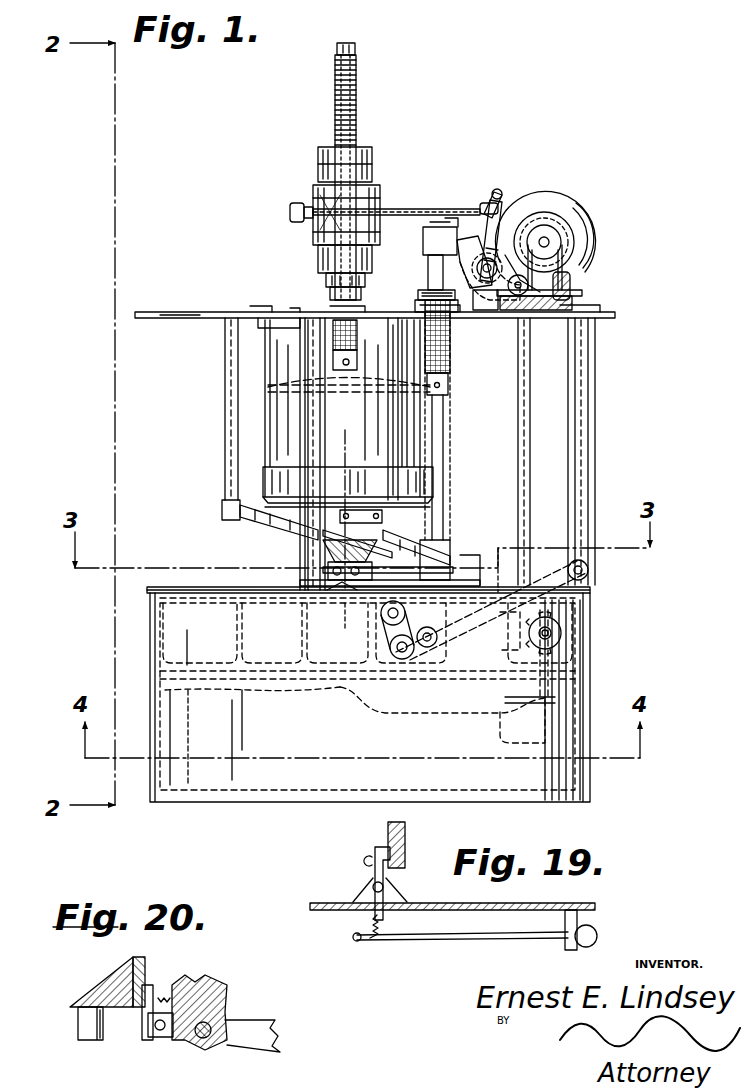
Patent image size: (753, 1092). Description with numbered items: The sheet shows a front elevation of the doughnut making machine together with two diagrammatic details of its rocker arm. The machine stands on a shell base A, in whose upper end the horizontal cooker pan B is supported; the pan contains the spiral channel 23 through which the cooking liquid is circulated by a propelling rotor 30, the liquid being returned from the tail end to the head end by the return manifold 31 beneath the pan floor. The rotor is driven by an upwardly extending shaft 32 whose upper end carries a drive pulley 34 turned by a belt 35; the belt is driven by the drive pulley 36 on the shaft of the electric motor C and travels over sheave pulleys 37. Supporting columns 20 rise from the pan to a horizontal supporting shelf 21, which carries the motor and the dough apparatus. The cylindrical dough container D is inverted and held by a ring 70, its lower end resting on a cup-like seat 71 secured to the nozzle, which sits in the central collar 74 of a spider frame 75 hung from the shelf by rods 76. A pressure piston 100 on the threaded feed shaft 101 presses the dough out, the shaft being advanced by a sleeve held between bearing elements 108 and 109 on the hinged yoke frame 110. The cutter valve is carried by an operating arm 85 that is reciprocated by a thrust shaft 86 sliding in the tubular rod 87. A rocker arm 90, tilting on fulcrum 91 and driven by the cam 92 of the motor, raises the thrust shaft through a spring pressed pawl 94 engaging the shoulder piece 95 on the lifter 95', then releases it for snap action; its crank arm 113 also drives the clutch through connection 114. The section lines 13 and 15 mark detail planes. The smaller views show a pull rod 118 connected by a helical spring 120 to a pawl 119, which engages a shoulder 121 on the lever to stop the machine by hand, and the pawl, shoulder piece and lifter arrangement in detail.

In FIG. 1, the feed shaft 101 is at (356, 90).
In FIG. 1, the fixed bearing element 108 is at (318, 162).
In FIG. 1, the upper yoke frame 110 is at (313, 196).
In FIG. 1, the fixed bearing element 109 is at (318, 256).
In FIG. 1, the connection 114 is at (406, 208).
In FIG. 1, the section line 15- 15 is at (288, 627).
In FIG. 1, the section line 13- 13 is at (338, 430).
In FIG. 1, the shoulder piece 95 is at (477, 171).
In FIG. 20, the shoulder piece 95 is at (167, 975).
In FIG. 1, the lifter 95' is at (440, 206).
In FIG. 20, the lifter 95' is at (89, 982).
In FIG. 1, the spring pressed pawl 94 is at (458, 240).
In FIG. 20, the spring pressed pawl 94 is at (147, 1020).
In FIG. 1, the crank arm 113 is at (499, 188).
In FIG. 20, the crank arm 113 is at (212, 986).
In FIG. 1, the rocker arm 90 is at (513, 262).
In FIG. 19, the rocker arm 90 is at (388, 830).
In FIG. 20, the rocker arm 90 is at (268, 1038).
In FIG. 1, the fulcrum 91 is at (488, 290).
In FIG. 20, the fulcrum 91 is at (220, 1026).
In FIG. 1, the eccentric or cam 92 is at (562, 228).
In FIG. 1, the drive pulley 36 is at (552, 242).
In FIG. 1, the electric motor C is at (600, 250).
In FIG. 1, the belt 35 is at (563, 268).
In FIG. 1, the sheave pulleys 37 is at (575, 284).
In FIG. 1, the drive pulley 34 is at (527, 292).
In FIG. 1, the thrust shaft 86 is at (428, 277).
In FIG. 20, the thrust shaft 86 is at (78, 1027).
In FIG. 1, the tubular spider supporting rod 87 is at (450, 432).
In FIG. 1, the supporting shelf 21 is at (185, 311).
In FIG. 19, the supporting shelf 21 is at (473, 903).
In FIG. 1, the supporting columns 20 is at (298, 348).
In FIG. 1, the shaft 32 is at (531, 490).
In FIG. 1, the ring 70 is at (258, 326).
In FIG. 1, the rods 76 is at (224, 375).
In FIG. 1, the pressure piston or pressure ring 100 is at (266, 392).
In FIG. 1, the container D is at (268, 447).
In FIG. 1, the circular upflanged plate or seat 71 is at (268, 496).
In FIG. 1, the spider frame 75 is at (250, 519).
In FIG. 1, the central circular collar 74 is at (322, 531).
In FIG. 1, the operating arm 85 is at (420, 558).
In FIG. 1, the shell base A is at (307, 780).
In FIG. 1, the spiral channel 23 is at (277, 650).
In FIG. 1, the cooker pan B is at (293, 672).
In FIG. 1, the return manifold 31 is at (400, 713).
In FIG. 1, the propelling rotor 30 is at (507, 703).
In FIG. 19, the shoulder 121 is at (404, 848).
In FIG. 19, the pawl 119 is at (360, 883).
In FIG. 19, the pull rod 118 is at (461, 940).
In FIG. 19, the helical spring 120 is at (362, 925).